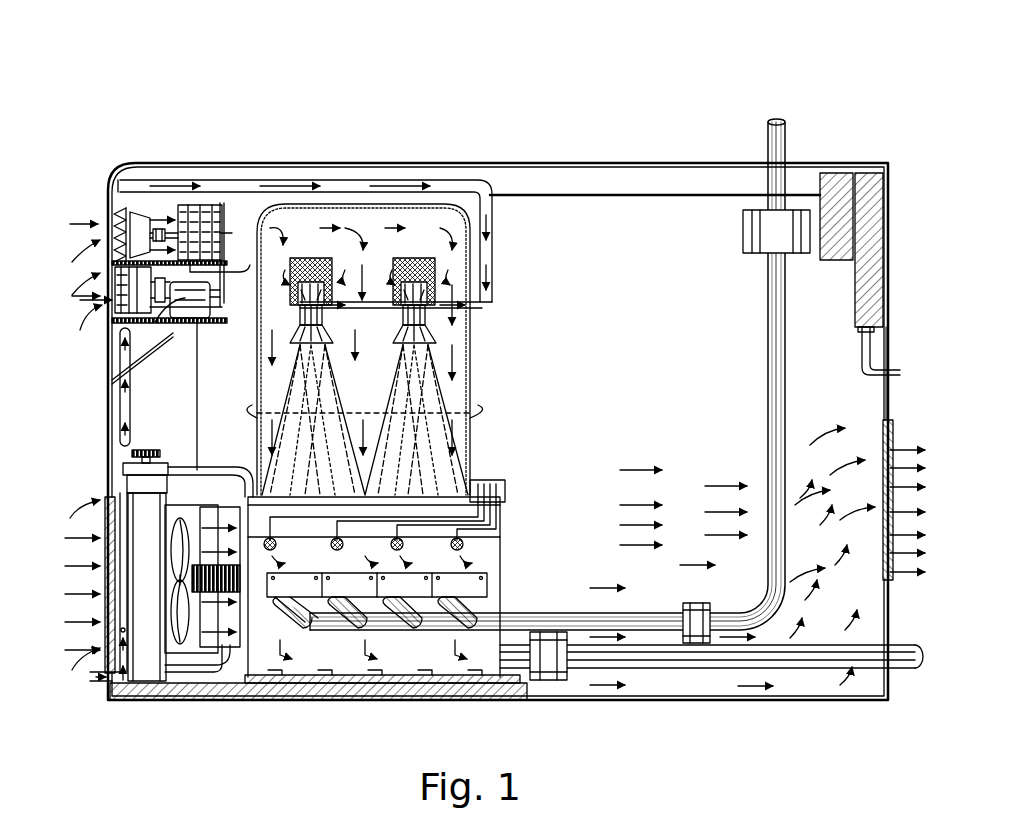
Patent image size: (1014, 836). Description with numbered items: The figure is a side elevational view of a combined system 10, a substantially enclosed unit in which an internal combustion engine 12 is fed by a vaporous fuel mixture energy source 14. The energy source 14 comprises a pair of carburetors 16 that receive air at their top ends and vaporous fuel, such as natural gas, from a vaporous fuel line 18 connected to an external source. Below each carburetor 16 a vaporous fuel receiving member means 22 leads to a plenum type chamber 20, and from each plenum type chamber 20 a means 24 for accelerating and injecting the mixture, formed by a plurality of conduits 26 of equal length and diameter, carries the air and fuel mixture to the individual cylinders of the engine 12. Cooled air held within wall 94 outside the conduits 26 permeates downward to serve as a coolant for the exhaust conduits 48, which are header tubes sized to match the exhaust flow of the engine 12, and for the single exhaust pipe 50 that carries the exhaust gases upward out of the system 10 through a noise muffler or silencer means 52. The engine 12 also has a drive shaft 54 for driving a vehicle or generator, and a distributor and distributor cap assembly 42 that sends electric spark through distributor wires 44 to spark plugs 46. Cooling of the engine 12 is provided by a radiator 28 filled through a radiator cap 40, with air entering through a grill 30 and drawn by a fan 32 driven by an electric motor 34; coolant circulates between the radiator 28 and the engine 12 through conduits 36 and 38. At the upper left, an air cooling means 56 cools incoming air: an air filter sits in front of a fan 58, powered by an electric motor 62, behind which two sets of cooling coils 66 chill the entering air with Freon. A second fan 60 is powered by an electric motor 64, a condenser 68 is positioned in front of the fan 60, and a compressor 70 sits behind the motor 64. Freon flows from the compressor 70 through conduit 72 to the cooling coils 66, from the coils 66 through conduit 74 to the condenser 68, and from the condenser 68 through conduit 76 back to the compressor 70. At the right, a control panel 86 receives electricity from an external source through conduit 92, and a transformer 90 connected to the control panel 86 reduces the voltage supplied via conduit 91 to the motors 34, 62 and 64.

The combined system 10 is at (598, 118).
The internal combustion engine 12 is at (318, 618).
The vaporous fuel mixture energy source 14 is at (498, 325).
The carburetors 16 is at (316, 255).
The vaporous fuel line 18 is at (193, 178).
The plenum type chamber 20 is at (398, 330).
The vaporous fuel receiving member means 22 is at (302, 322).
The means for accelerating and injecting 24 is at (275, 385).
The conduits 26 is at (336, 405).
The radiator 28 is at (145, 665).
The grill 30 is at (98, 498).
The fan 32 is at (185, 610).
The electric motor 34 is at (240, 578).
The conduit 36 is at (225, 655).
The conduit 38 is at (222, 467).
The radiator cap 40 is at (140, 449).
The distributor and distributor cap assembly 42 is at (500, 478).
The distributor wires 44 is at (503, 518).
The spark plugs 46 is at (331, 547).
The exhaust conduits 48 is at (500, 595).
The exhaust pipe 50 is at (765, 310).
The noise muffler or silencer means 52 is at (748, 255).
The drive shaft 54 is at (688, 672).
The air cooling means 56 is at (130, 210).
The fan 58 is at (108, 210).
The fan 60 is at (118, 305).
The electric motor 62 is at (168, 205).
The electric motor 64 is at (222, 233).
The cooling coils 66 is at (248, 268).
The condenser 68 is at (112, 304).
The compressor 70 is at (192, 300).
The conduit 72 is at (225, 268).
The conduit 74 is at (145, 323).
The conduit 76 is at (145, 335).
The control panel 86 is at (855, 300).
The transformer 90 is at (838, 260).
The conduit 91 is at (652, 197).
The conduit 92 is at (862, 358).
The wall 94 is at (252, 412).